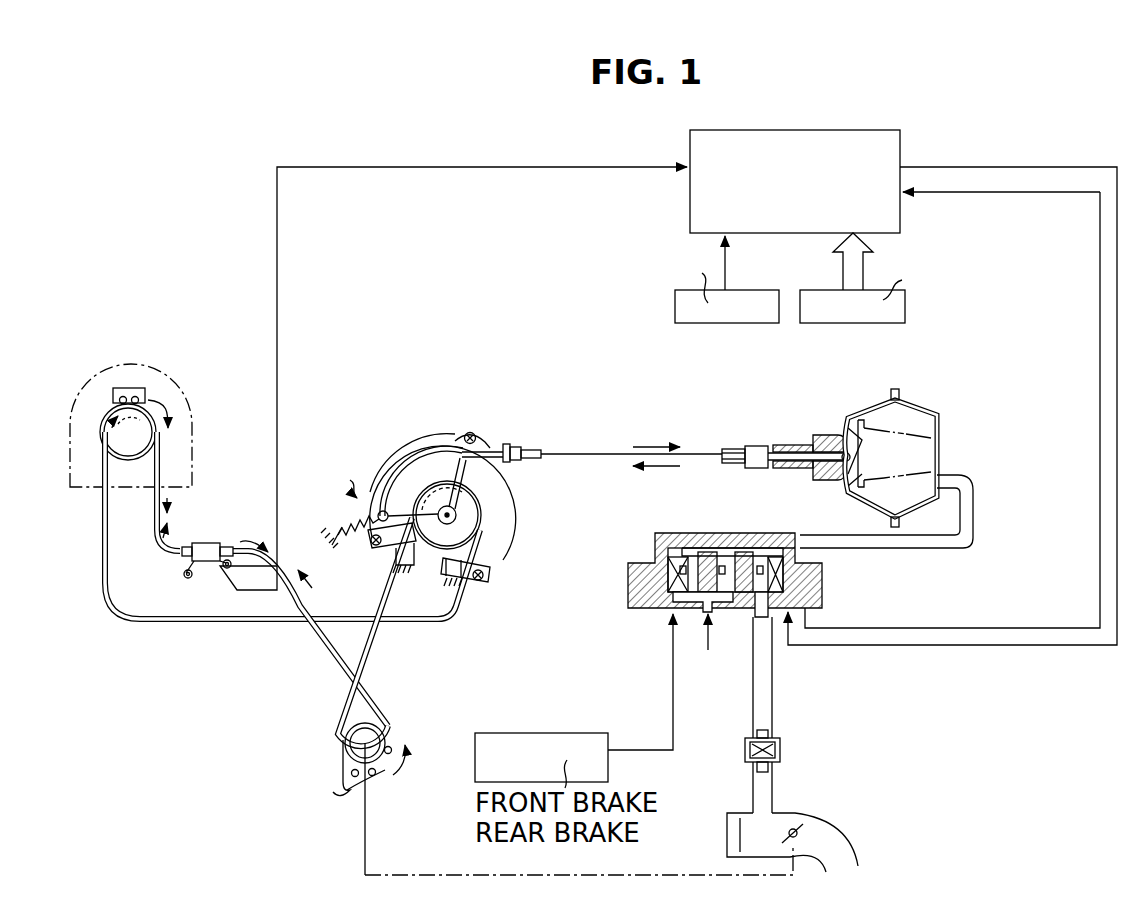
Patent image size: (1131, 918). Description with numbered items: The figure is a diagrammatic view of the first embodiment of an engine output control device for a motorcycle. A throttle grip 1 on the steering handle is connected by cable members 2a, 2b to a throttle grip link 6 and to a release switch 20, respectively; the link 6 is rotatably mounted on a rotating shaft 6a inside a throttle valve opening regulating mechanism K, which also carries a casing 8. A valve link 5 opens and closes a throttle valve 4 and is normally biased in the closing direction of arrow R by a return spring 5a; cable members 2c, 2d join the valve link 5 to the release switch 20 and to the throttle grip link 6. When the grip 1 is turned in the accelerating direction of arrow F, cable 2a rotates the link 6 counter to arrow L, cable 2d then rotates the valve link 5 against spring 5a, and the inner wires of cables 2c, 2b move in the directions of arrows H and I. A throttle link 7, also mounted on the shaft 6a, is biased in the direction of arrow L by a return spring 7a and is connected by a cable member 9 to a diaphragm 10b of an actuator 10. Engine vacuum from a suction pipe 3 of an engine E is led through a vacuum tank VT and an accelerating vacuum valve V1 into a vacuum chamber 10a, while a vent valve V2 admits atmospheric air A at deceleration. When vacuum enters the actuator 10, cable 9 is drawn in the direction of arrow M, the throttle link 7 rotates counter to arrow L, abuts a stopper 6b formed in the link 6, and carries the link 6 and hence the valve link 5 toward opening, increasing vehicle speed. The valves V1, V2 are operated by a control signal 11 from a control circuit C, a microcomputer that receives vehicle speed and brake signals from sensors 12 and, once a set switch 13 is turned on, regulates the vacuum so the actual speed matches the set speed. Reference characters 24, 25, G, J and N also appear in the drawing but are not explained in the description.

The throttle grip 1 is at (130, 388).
The cable member 2a is at (195, 620).
The cable member 2b is at (162, 470).
The cable member 2c is at (322, 645).
The cable member 2d is at (370, 644).
The suction pipe 3 is at (810, 816).
The throttle valve 4 is at (796, 828).
The valve link 5 is at (359, 776).
The return spring 5a is at (345, 748).
The throttle grip link 6 is at (469, 510).
The rotating shaft 6a is at (482, 515).
The stopper 6b is at (480, 480).
The throttle link 7 is at (420, 470).
The return spring 7a is at (334, 528).
The casing 8 is at (442, 440).
The cable member 9 is at (500, 444).
The actuator 10 is at (912, 462).
The vacuum chamber 10a is at (920, 448).
The diaphragm 10b is at (826, 436).
The control signal 11 is at (1117, 297).
The sensors 12 is at (875, 323).
The set switch 13 is at (750, 323).
The release switch 20 is at (207, 542).
The cable fitting 24 is at (228, 545).
The cable fitting 25 is at (188, 545).
The control circuit C is at (910, 128).
The atmospheric air A is at (725, 584).
The accelerating vacuum valve V1 is at (762, 565).
The vent valve V2 is at (723, 565).
The vacuum tank VT is at (773, 697).
The engine E is at (826, 862).
The arrow F is at (180, 412).
The rotation direction G is at (100, 412).
The arrow H is at (252, 542).
The arrow I is at (168, 503).
The cable direction J is at (306, 585).
The throttle valve opening regulating mechanism K is at (166, 530).
The arrow L is at (343, 477).
The arrow M is at (652, 447).
The rod direction N is at (656, 468).
The arrow R is at (398, 772).